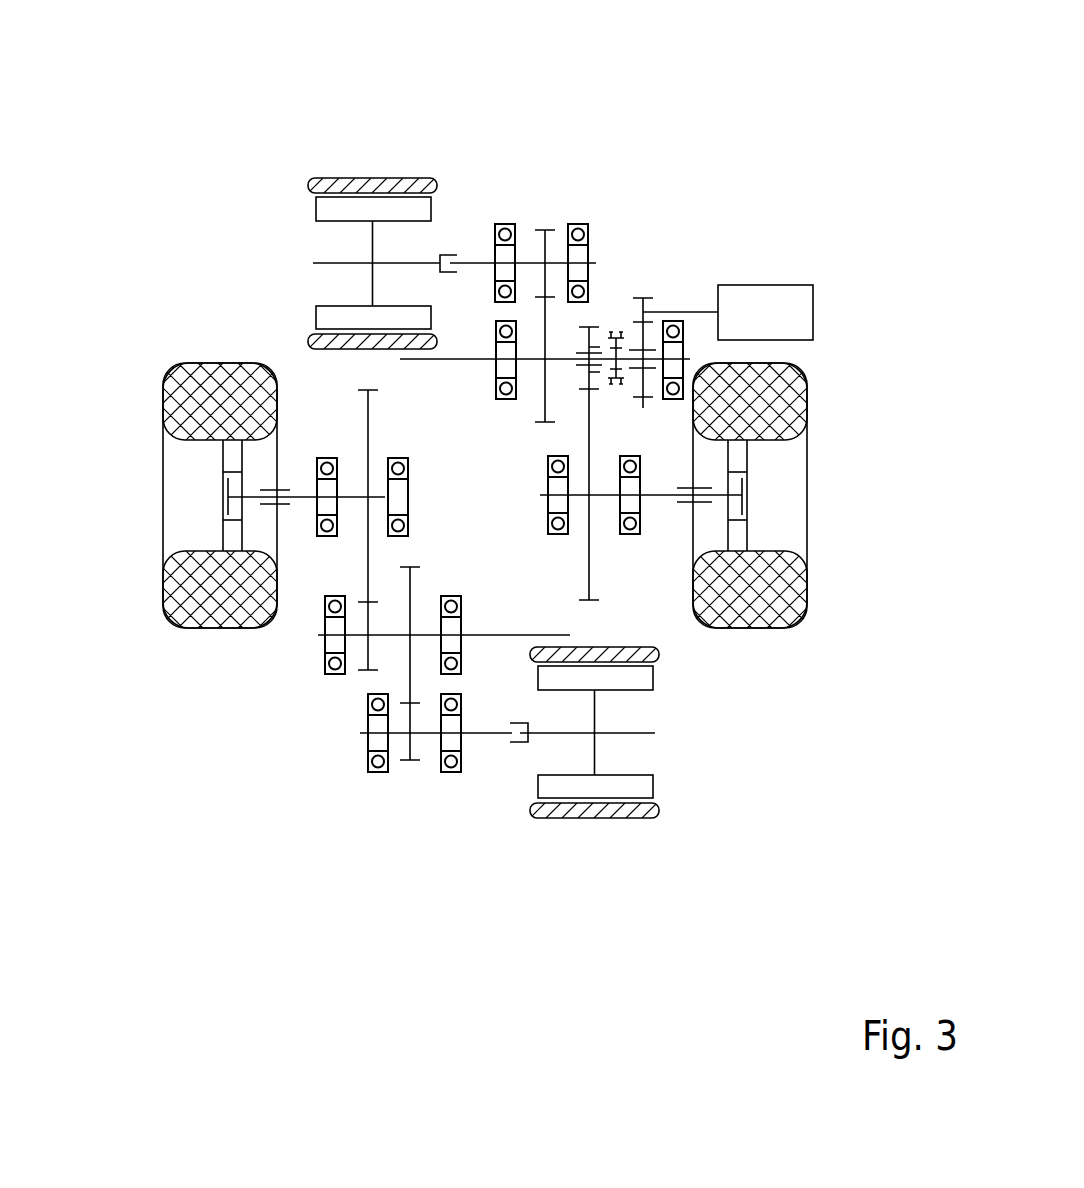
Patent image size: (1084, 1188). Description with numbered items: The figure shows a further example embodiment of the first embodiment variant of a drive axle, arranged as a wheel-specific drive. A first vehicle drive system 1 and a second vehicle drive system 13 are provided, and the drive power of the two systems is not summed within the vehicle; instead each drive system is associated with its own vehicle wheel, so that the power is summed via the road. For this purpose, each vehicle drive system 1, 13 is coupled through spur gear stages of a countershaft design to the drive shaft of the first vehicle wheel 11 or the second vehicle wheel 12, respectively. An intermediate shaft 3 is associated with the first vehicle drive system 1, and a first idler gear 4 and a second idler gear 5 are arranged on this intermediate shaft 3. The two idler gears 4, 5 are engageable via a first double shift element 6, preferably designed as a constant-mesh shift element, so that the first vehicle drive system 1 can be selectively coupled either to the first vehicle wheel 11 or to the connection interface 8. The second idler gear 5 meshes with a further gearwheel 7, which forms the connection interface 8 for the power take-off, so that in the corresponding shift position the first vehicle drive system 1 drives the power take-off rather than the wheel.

The first vehicle drive system 1 is at (327, 251).
The intermediate shaft 3 is at (533, 362).
The first idler gear 4 is at (596, 326).
The second idler gear 5 is at (648, 400).
The first double shift element 6 is at (618, 326).
The further gearwheel 7 is at (648, 298).
The connection interface 8 is at (652, 309).
The first vehicle wheel 11 is at (775, 398).
The second vehicle wheel 12 is at (200, 602).
The second vehicle drive system 13 is at (637, 785).